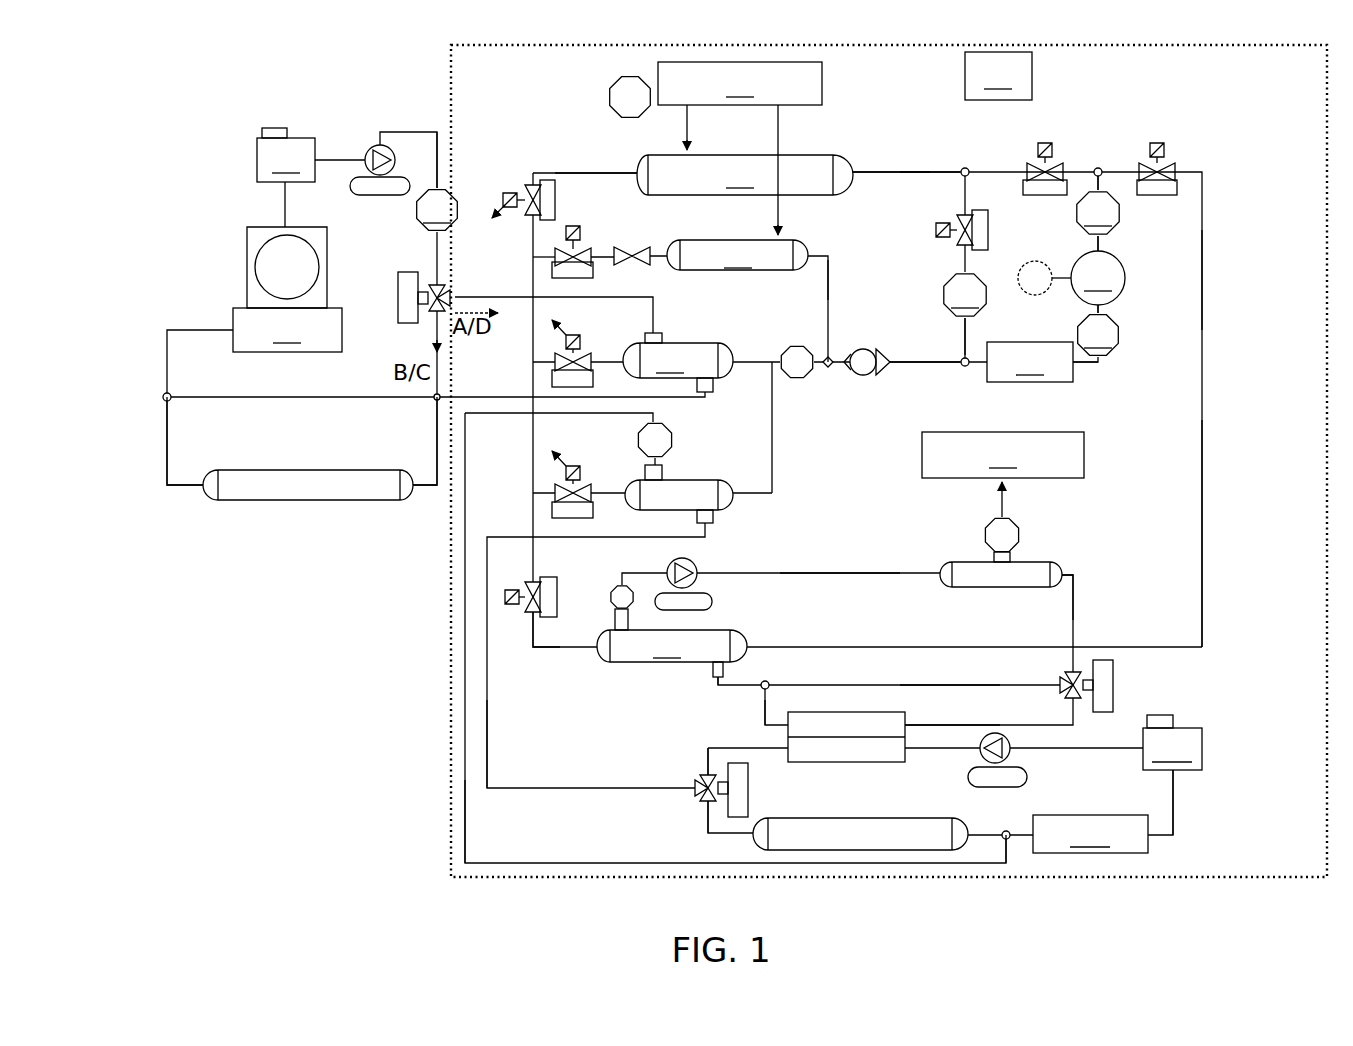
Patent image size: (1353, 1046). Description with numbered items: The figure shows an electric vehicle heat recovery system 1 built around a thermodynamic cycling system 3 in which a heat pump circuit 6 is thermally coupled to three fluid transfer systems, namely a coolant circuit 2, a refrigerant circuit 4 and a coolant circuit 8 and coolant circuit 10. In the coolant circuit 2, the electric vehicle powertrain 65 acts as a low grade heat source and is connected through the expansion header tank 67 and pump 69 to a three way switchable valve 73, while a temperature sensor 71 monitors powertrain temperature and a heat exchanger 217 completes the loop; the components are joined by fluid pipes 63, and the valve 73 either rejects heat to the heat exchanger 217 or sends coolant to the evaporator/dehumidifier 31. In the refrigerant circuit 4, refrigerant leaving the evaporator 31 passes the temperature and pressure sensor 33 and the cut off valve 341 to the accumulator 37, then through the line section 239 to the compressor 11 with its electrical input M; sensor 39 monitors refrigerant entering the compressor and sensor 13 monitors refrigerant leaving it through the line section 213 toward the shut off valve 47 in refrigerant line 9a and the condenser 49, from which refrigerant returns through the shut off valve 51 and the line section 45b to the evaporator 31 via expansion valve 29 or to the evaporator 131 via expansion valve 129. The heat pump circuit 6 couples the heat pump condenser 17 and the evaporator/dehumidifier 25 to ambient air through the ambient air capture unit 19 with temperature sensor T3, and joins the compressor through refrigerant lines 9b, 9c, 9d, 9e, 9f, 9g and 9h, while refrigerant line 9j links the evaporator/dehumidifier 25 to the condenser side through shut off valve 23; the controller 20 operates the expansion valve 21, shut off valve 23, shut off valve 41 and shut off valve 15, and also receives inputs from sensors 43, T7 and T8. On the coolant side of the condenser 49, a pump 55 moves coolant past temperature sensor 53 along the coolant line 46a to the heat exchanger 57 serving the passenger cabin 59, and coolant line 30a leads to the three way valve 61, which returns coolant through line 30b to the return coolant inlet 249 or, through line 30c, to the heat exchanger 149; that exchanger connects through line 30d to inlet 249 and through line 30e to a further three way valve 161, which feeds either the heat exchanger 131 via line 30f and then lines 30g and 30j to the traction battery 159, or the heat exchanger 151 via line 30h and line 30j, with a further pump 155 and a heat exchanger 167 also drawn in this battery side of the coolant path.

The heat recovery system 1 is at (1242, 153).
The coolant circuit 2 is at (218, 248).
The thermodynamic cycling system 3 is at (423, 628).
The refrigerant circuit 4 is at (1213, 484).
The heat pump circuit 6 is at (885, 160).
The coolant circuit 8 is at (1089, 585).
The coolant circuit 10 is at (1191, 812).
The compressor 11 is at (1098, 278).
The sensor 13 is at (1098, 213).
The shut off valve 15 is at (1023, 185).
The heat pump condenser 17 is at (745, 175).
The ambient air capture unit 19 is at (740, 83).
The controller 20 is at (998, 76).
The expansion valve 21 is at (542, 178).
The shut off valve 23 is at (593, 272).
The evaporator/dehumidifier 25 is at (737, 255).
The expansion valve 29 is at (552, 380).
The coolant line 30a is at (1204, 615).
The coolant line 30b is at (935, 674).
The coolant line 30c is at (949, 718).
The coolant line 30d is at (755, 710).
The coolant line 30e is at (700, 760).
The coolant line 30f is at (496, 765).
The coolant line 30g is at (450, 805).
The coolant line 30h is at (699, 822).
The coolant line 30j is at (1018, 842).
The evaporator/dehumidifier 31 is at (678, 362).
The temperature and pressure sensor 33 is at (797, 345).
The accumulator 37 is at (1030, 362).
The temperature and pressure sensor 39 is at (1098, 335).
The shut off valve 41 is at (988, 232).
The sensor 43 is at (965, 295).
The coolant line 45b is at (545, 657).
The coolant line 46a is at (840, 563).
The shut off valve 47 is at (1177, 190).
The condenser 49 is at (672, 643).
The shut off valve 51 is at (557, 585).
The temperature sensor 53 is at (611, 603).
The pump 55 is at (712, 600).
The heat exchanger 57 is at (962, 562).
The passenger cabin 59 is at (1003, 455).
The three way valve 61 is at (1113, 685).
The fluid pipes 63 is at (412, 130).
The electric vehicle powertrain 65 is at (287, 330).
The expansion header tank 67 is at (286, 155).
The pump 69 is at (378, 196).
The temperature sensor 71 is at (437, 210).
The three way switchable valve 73 is at (398, 300).
The expansion valve 129 is at (552, 510).
The evaporator 131 is at (680, 480).
The heat exchanger 149 is at (845, 712).
The heat exchanger 151 is at (860, 851).
The coolant pump 155 is at (968, 777).
The traction battery 159 is at (1090, 834).
The three way valve 161 is at (748, 790).
The heating heat exchanger 167 is at (1172, 742).
The suction line 213 is at (1101, 241).
The heat exchanger 217 is at (305, 501).
The suction line section 239 is at (1101, 309).
The return coolant inlet 249 is at (724, 676).
The cut off valve 341 is at (863, 378).
The refrigerant line 9a is at (1211, 270).
The refrigerant line 9b is at (583, 160).
The refrigerant line 9c is at (841, 274).
The refrigerant line 9d is at (903, 349).
The refrigerant line 9e is at (1089, 373).
The refrigerant line 9f is at (952, 334).
The refrigerant line 9g is at (1107, 184).
The refrigerant line 9h is at (932, 160).
The refrigerant line 9j is at (602, 246).
The temperature sensor T3 is at (630, 97).
The sensor T7 is at (637, 440).
The sensor T8 is at (1020, 530).
The electrical input M is at (1044, 278).